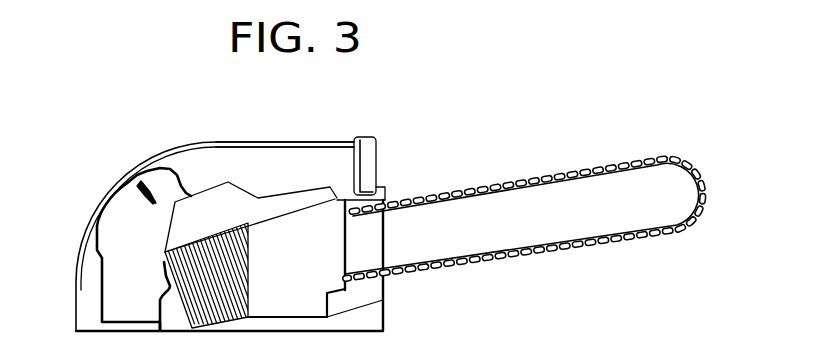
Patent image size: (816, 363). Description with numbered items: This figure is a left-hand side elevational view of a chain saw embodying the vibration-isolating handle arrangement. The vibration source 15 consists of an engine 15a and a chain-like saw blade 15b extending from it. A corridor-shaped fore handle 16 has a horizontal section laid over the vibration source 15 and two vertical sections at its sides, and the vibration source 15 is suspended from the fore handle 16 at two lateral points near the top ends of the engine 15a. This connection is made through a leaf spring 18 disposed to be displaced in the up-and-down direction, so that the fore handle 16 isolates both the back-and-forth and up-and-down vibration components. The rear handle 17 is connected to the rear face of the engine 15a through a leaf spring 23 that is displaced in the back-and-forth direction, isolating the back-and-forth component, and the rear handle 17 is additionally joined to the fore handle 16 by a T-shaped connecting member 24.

The vibration source 15 is at (272, 230).
The engine 15a is at (303, 227).
The chain-like saw blade 15b is at (477, 192).
The fore handle 16 is at (363, 150).
The rear handle 17 is at (85, 275).
The leaf spring 18 is at (363, 190).
The leaf spring 23 is at (170, 288).
The T-shaped connecting member 24 is at (236, 142).